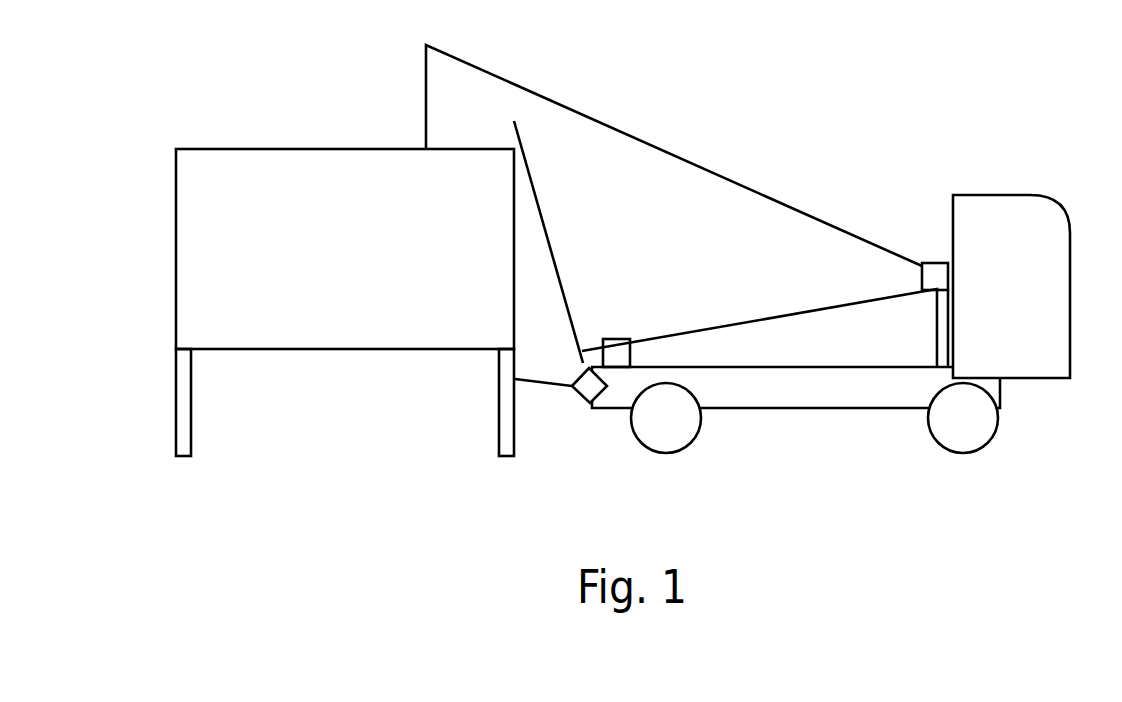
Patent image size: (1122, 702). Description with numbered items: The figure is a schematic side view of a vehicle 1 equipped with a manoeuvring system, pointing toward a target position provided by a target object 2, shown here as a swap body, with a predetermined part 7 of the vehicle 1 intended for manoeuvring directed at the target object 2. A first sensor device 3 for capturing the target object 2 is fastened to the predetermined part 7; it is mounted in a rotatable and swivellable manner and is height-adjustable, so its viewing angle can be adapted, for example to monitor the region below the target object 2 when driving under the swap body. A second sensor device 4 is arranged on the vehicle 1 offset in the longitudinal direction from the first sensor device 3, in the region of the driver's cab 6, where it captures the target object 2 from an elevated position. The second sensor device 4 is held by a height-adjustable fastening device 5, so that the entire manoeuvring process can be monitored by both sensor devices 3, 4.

The vehicle 1 is at (753, 148).
The target object 2 is at (315, 133).
The first sensor device 3 is at (580, 394).
The second sensor device 4 is at (935, 278).
The height-adjustable fastening device 5 is at (937, 343).
The driver's cab 6 is at (1010, 195).
The predetermined part 7 is at (615, 413).